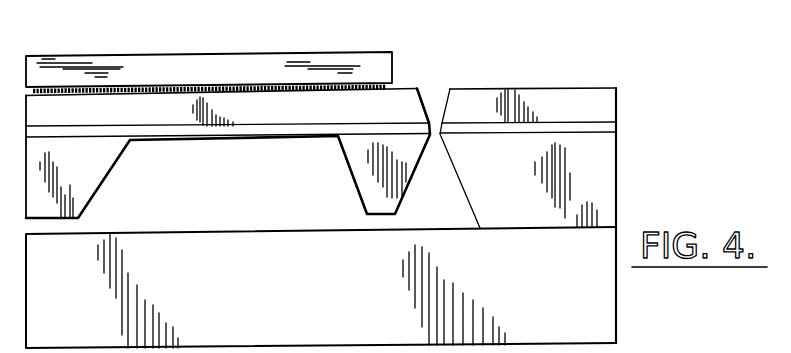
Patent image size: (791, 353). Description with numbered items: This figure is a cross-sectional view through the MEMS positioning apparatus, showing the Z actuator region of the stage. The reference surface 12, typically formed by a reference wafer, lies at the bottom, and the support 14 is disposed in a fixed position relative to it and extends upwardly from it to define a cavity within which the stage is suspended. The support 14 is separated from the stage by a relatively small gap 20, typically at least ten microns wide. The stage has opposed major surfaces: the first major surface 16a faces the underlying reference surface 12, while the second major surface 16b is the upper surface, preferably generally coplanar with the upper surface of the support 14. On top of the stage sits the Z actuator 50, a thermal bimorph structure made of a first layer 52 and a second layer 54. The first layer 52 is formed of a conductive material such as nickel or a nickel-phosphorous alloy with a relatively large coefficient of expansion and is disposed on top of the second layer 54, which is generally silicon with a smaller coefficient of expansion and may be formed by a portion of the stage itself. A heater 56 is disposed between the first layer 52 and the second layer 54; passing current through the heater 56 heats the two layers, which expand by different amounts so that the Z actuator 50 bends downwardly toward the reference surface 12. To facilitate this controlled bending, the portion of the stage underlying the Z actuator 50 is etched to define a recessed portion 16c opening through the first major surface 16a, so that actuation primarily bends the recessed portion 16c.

The reference surface 12 is at (223, 230).
The support 14 is at (600, 157).
The first major surface 16a is at (402, 90).
The second major surface 16b is at (73, 198).
The recessed portion 16c is at (262, 174).
The gap 20 is at (436, 127).
The Z actuator 50 is at (356, 34).
The first layer 52 is at (82, 57).
The second layer 54 is at (244, 113).
The heater 56 is at (82, 96).